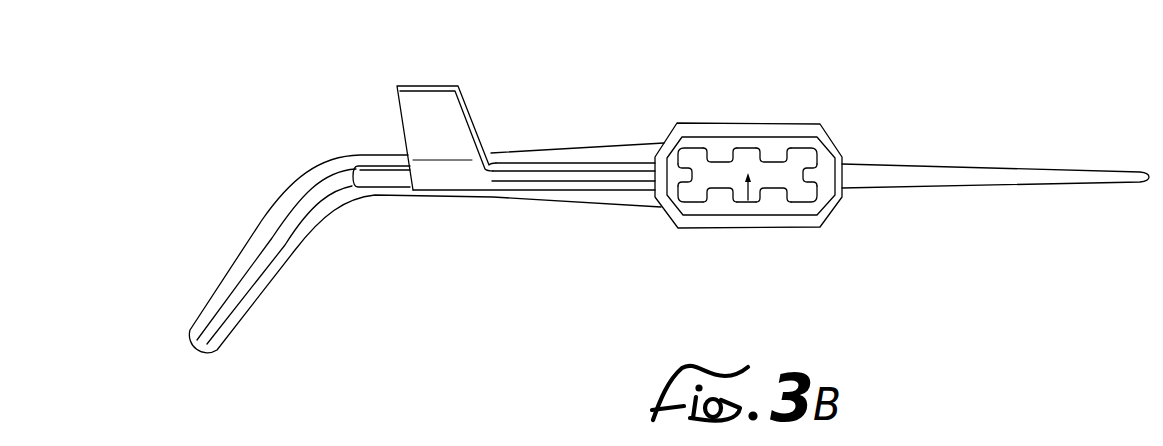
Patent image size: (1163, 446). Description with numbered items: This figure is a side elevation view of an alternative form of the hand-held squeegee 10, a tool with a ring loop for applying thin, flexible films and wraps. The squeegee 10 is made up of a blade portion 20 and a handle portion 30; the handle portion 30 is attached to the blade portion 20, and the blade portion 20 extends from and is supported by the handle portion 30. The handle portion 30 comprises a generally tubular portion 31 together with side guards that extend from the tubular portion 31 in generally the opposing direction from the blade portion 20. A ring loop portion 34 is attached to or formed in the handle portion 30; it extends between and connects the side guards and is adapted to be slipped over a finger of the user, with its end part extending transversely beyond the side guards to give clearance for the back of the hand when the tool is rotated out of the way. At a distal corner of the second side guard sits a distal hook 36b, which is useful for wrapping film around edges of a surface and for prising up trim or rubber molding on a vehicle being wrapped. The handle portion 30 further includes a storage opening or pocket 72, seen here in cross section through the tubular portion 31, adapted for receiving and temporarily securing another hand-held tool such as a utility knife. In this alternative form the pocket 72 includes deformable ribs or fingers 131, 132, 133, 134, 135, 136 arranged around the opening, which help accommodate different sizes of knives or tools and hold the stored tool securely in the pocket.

The hand-held squeegee 10 is at (918, 254).
The blade portion 20 is at (989, 128).
The handle portion 30 is at (629, 110).
The tubular portion 31 is at (748, 132).
The ring loop portion 34 is at (250, 268).
The distal hook 36b is at (437, 128).
The storage opening or pocket 72 is at (748, 200).
The deformable rib or finger 131 is at (720, 154).
The deformable rib or finger 132 is at (778, 154).
The deformable rib or finger 133 is at (815, 174).
The deformable rib or finger 134 is at (779, 197).
The deformable rib or finger 135 is at (720, 196).
The deformable rib or finger 136 is at (683, 177).